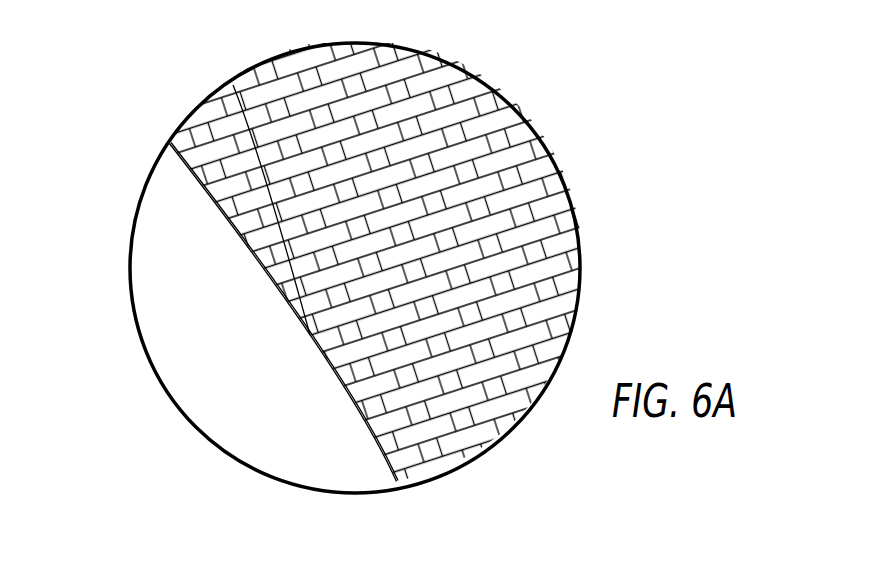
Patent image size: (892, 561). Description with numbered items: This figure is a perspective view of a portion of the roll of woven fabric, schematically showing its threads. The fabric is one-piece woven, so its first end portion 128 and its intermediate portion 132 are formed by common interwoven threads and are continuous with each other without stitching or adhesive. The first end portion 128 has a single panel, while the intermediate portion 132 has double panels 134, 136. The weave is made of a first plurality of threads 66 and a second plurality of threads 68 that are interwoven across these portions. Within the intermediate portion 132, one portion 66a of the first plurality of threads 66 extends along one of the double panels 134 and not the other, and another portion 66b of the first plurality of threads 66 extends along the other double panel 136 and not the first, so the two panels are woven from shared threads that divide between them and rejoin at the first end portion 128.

The first plurality of threads 66 is at (433, 463).
The portion of the first plurality of threads 66a is at (223, 109).
The another portion of the first plurality of threads 66b is at (312, 76).
The second plurality of threads 68 is at (442, 182).
The first end portion 128 is at (358, 422).
The intermediate portion 132 is at (200, 300).
The double panel 134 is at (203, 198).
The double panel 136 is at (187, 152).